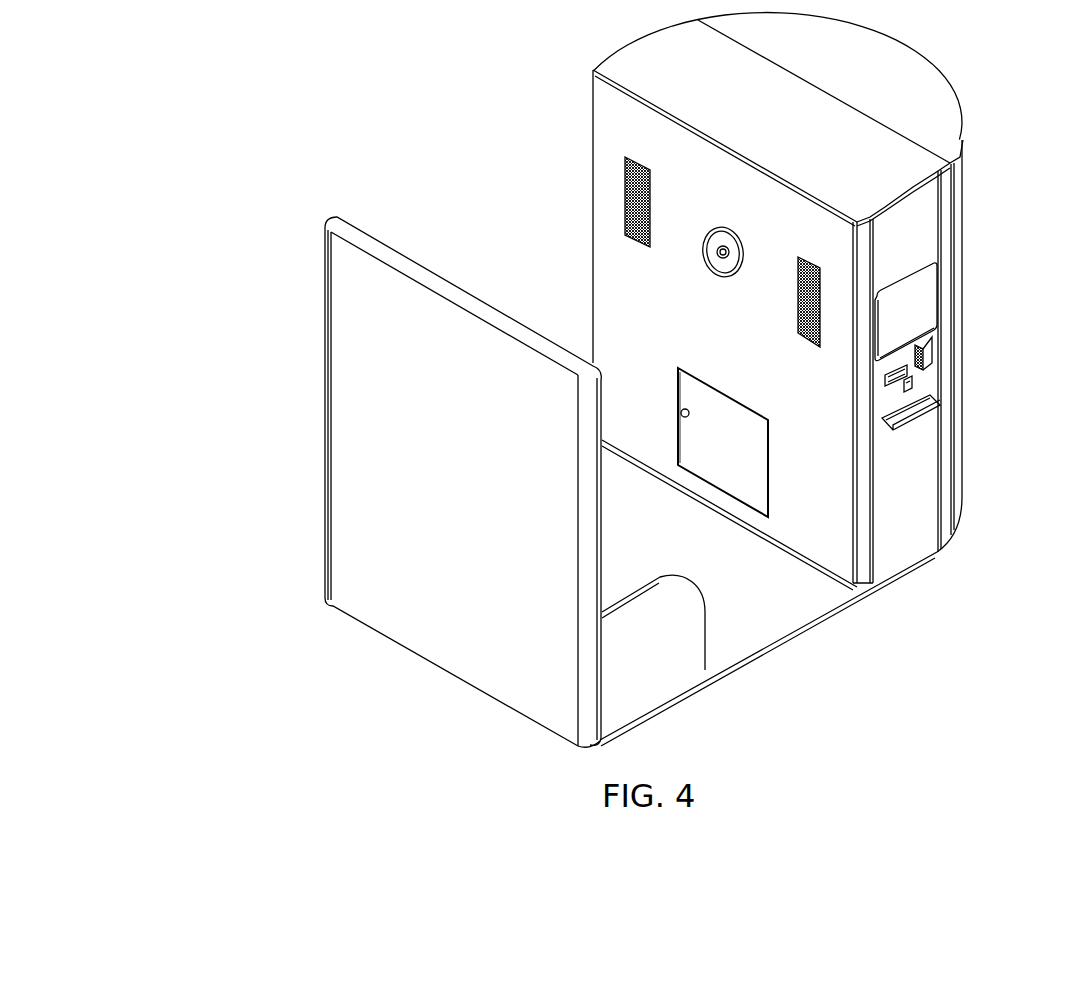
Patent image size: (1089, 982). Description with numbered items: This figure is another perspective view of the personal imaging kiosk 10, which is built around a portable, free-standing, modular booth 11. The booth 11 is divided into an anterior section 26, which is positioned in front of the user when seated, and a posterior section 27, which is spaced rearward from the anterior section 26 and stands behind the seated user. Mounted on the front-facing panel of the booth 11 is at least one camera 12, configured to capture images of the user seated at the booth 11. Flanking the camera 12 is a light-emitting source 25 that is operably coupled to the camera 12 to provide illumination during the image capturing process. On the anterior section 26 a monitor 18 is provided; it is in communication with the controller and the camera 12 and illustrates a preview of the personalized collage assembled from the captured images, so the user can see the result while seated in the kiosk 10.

The personal imaging kiosk 10 is at (492, 118).
The portable, free-standing, modular booth 11 is at (877, 606).
The camera 12 is at (718, 248).
The monitor 18 is at (910, 303).
The light-emitting source 25 is at (797, 325).
The anterior section 26 is at (908, 173).
The posterior section 27 is at (360, 371).